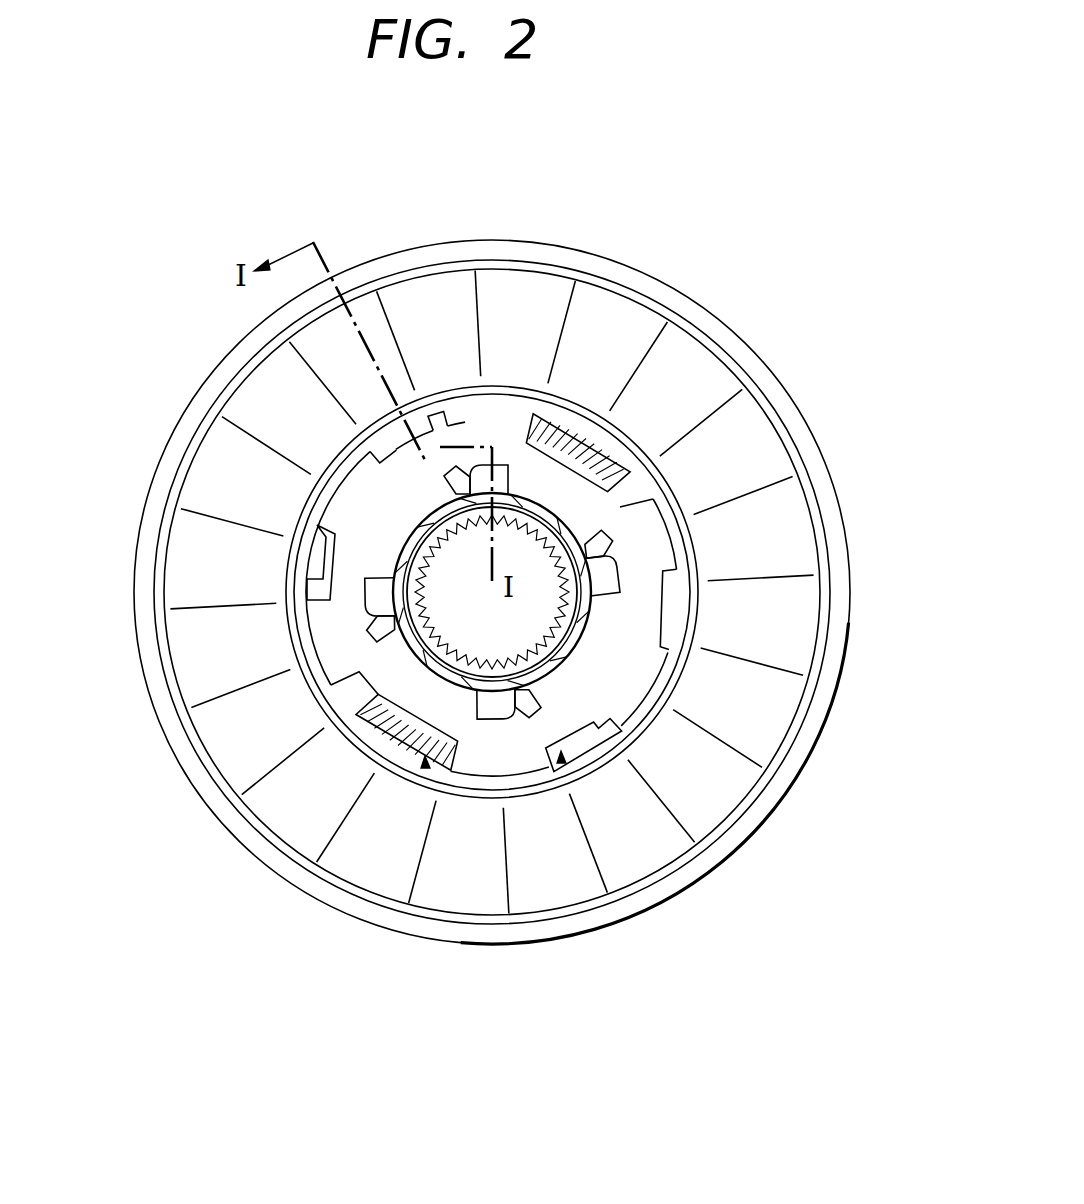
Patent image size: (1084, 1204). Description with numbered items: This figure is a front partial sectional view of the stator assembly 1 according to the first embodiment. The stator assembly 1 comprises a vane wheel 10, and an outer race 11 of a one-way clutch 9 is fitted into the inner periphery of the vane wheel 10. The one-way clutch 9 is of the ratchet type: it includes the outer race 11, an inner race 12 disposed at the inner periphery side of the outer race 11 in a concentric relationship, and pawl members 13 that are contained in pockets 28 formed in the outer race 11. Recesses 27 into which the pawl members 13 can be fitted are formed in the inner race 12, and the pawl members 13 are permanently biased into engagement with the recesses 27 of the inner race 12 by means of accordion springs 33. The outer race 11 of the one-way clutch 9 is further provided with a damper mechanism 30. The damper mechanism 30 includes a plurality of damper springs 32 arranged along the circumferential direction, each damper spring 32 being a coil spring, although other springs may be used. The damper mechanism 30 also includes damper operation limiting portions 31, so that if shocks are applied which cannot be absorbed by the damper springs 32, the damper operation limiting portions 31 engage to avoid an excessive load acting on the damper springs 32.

The stator assembly 1 is at (652, 238).
The one-way clutch 9 is at (638, 718).
The vane wheel 10 is at (690, 355).
The outer race 11 is at (657, 542).
The inner race 12 is at (605, 610).
The pawl members 13 is at (377, 593).
The recesses 27 is at (590, 648).
The pockets 28 is at (378, 590).
The damper mechanism 30 is at (426, 768).
The damper operation limiting portions 31 is at (603, 722).
The damper springs 32 is at (358, 716).
The accordion springs 33 is at (387, 627).